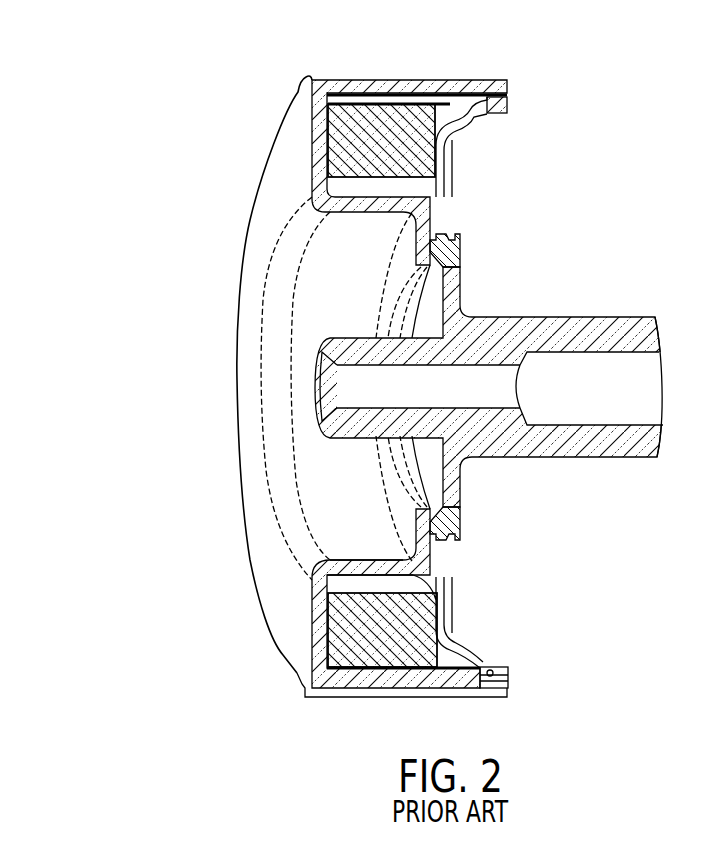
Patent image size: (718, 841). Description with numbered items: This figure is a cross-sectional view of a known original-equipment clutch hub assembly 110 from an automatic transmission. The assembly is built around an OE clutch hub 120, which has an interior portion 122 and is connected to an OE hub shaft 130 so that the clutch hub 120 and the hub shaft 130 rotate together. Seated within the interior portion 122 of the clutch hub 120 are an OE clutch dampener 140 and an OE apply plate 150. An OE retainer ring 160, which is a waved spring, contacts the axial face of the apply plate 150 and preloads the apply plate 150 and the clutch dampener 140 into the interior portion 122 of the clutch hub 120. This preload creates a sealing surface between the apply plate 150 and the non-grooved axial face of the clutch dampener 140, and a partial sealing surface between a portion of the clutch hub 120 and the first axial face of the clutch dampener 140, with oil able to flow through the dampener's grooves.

The OE 4-5-6 clutch hub assembly 110 is at (140, 101).
The OE clutch hub 120 is at (258, 291).
The interior portion 122 is at (357, 583).
The OE hub shaft 130 is at (617, 450).
The OE clutch dampener 140 is at (373, 137).
The OE apply plate 150 is at (447, 173).
The OE retainer ring 160 is at (497, 667).